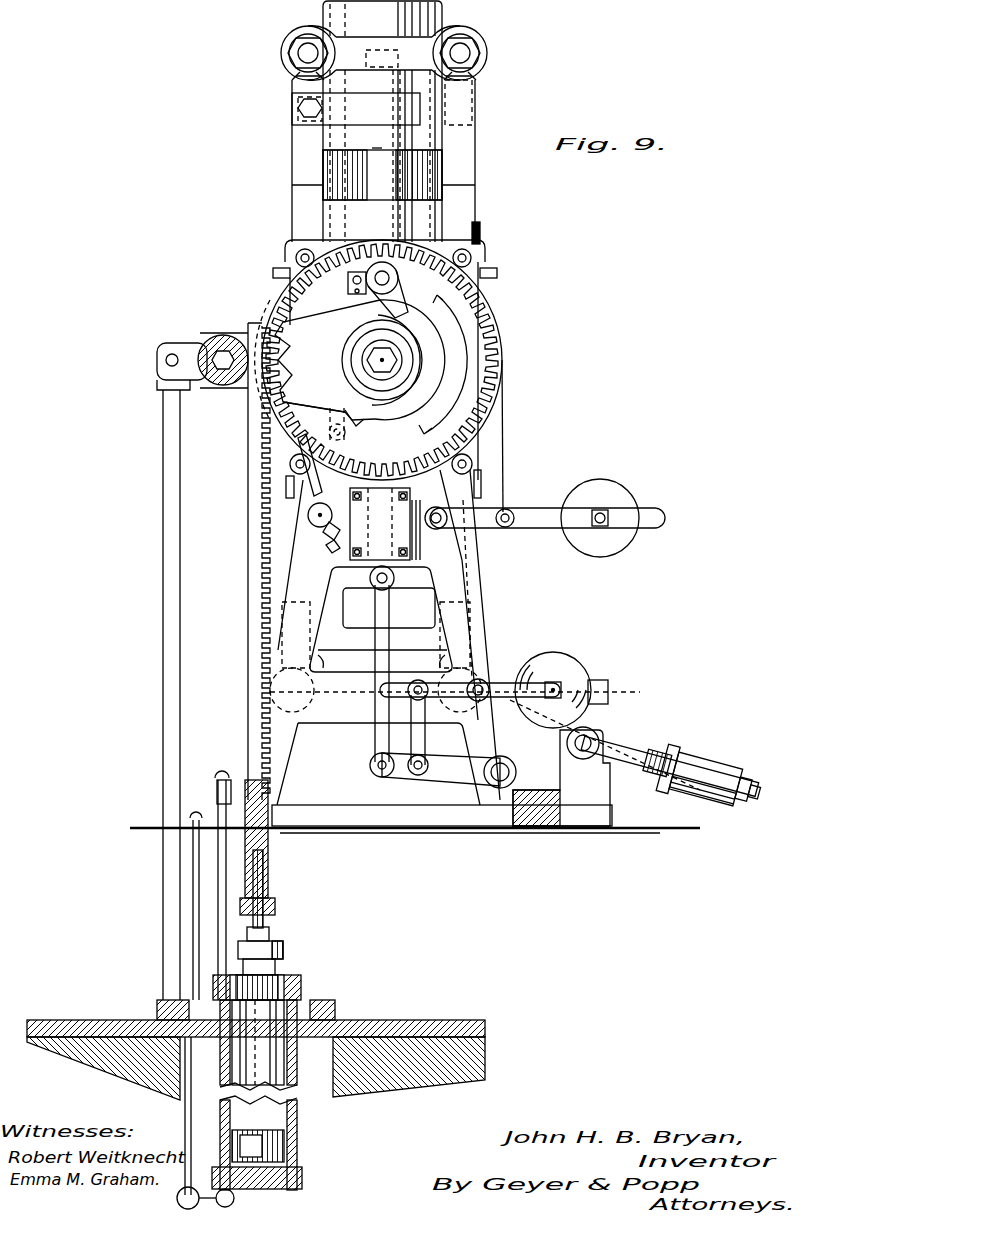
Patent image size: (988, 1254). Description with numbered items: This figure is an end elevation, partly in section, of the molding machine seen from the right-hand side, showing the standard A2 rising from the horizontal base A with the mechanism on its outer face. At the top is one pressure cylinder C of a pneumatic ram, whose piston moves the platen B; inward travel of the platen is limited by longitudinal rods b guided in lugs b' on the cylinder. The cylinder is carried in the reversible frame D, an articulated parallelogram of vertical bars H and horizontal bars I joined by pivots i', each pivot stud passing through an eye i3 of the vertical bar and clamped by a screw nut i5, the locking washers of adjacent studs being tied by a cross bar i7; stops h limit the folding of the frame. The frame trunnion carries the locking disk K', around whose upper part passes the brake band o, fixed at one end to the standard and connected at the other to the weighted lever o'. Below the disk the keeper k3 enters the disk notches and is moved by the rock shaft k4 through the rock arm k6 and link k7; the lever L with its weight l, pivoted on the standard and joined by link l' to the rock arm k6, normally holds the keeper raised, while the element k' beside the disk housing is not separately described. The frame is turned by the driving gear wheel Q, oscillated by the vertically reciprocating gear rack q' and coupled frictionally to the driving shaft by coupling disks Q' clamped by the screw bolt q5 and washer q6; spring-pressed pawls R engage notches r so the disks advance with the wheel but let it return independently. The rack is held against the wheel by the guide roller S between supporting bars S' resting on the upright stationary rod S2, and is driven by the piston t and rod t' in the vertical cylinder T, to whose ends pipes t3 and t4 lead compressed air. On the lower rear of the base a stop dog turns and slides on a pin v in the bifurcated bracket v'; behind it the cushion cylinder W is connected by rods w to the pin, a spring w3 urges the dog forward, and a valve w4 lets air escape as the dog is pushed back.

The pressure cylinder C is at (382, 18).
The horizontal bars I is at (295, 23).
The horizontal pivots i' is at (381, 51).
The eye i3 is at (290, 66).
The screw nut i5 is at (296, 82).
The cross bar i7 is at (389, 53).
The reversible frame D is at (476, 112).
The stops h is at (372, 382).
The longitudinal rods b is at (369, 146).
The lugs b' is at (382, 175).
The vertical bars H is at (383, 184).
The platen B is at (484, 230).
The locking disk K' is at (395, 360).
The driving gear wheel Q is at (371, 364).
The coupling disks Q' is at (412, 365).
The screw bolt q5 is at (382, 360).
The washer q6 is at (372, 370).
The spring pressed pawls R is at (400, 292).
The notches r is at (410, 312).
The band o is at (512, 436).
The weighted lever o' is at (545, 518).
The standard A2 is at (478, 608).
The keeper k3 is at (385, 524).
The stud k' is at (485, 475).
The link l' is at (399, 671).
The links k7 is at (378, 698).
The rock arm k6 is at (445, 778).
The rock shaft k4 is at (499, 790).
The weight l is at (553, 679).
The lever L is at (600, 692).
The bracket v' is at (561, 778).
The pin v is at (591, 730).
The rods w is at (637, 751).
The spring w3 is at (667, 750).
The cushion cylinder W is at (700, 777).
The valve w4 is at (755, 758).
The base A is at (415, 819).
The gear rack q' is at (248, 625).
The guide roller S is at (222, 352).
The supporting bars S' is at (182, 354).
The stationary rod S2 is at (166, 705).
The pipe t3 is at (210, 885).
The pipe t4 is at (256, 1114).
The cylinder T is at (290, 1118).
The piston rod t' is at (258, 1042).
The piston t is at (258, 1146).